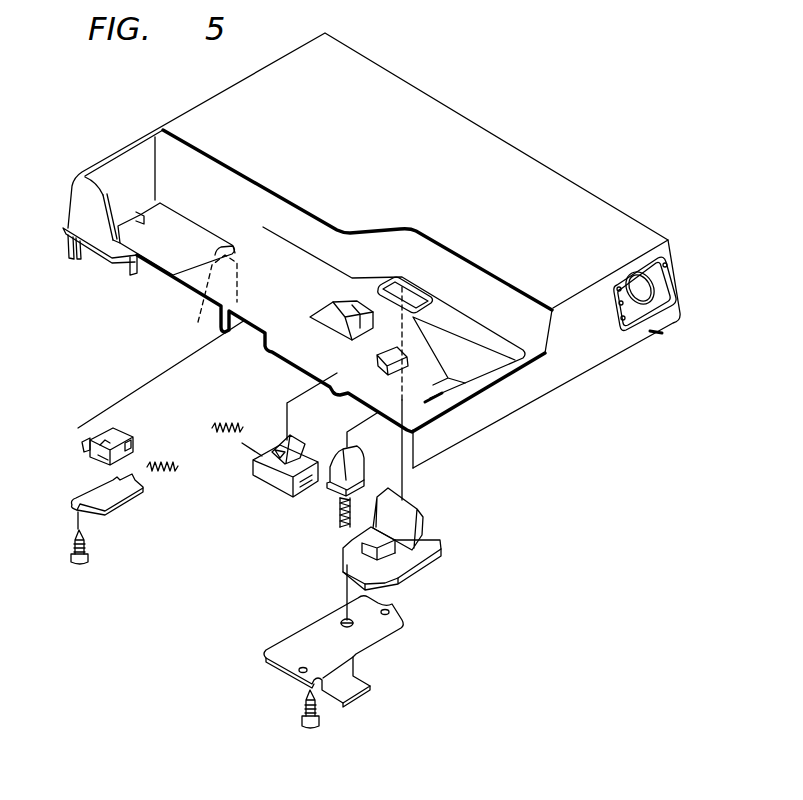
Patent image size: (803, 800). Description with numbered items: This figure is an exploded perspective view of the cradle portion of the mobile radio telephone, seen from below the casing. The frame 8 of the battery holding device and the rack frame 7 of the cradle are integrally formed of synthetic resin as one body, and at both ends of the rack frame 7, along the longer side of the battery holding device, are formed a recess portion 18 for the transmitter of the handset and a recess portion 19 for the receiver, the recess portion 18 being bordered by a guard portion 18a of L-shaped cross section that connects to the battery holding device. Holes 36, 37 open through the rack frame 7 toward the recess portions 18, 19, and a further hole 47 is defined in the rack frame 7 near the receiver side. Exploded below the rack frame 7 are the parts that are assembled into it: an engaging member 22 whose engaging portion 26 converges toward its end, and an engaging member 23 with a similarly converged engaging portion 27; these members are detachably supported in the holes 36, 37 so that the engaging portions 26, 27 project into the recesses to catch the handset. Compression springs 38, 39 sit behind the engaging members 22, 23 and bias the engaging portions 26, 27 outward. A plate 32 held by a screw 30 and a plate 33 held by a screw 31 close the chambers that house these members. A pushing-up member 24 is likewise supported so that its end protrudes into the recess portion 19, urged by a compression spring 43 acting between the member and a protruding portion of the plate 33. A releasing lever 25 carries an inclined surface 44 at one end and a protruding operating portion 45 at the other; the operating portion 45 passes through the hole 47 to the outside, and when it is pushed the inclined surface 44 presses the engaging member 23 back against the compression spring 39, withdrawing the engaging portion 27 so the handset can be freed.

The frame 8 is at (472, 132).
The rack frame 7 is at (197, 287).
The recess portion 18 is at (170, 258).
The guard portion 18a is at (92, 233).
The hole 36 is at (206, 296).
The hole 37 is at (368, 310).
The hole 47 is at (405, 296).
The recess portion 19 is at (437, 370).
The engaging member 22 is at (126, 438).
The engaging portion 26 is at (84, 449).
The compression spring 39 is at (224, 445).
The compression spring 38 is at (176, 487).
The plate 32 is at (117, 514).
The screw 30 is at (87, 562).
The engaging member 23 is at (273, 487).
The engaging portion 27 is at (302, 443).
The pushing-up member 24 is at (354, 458).
The compression spring 43 is at (338, 519).
The operating portion 45 is at (421, 507).
The releasing lever 25 is at (428, 561).
The inclined surface 44 is at (346, 562).
The plate 33 is at (378, 646).
The screw 31 is at (318, 726).